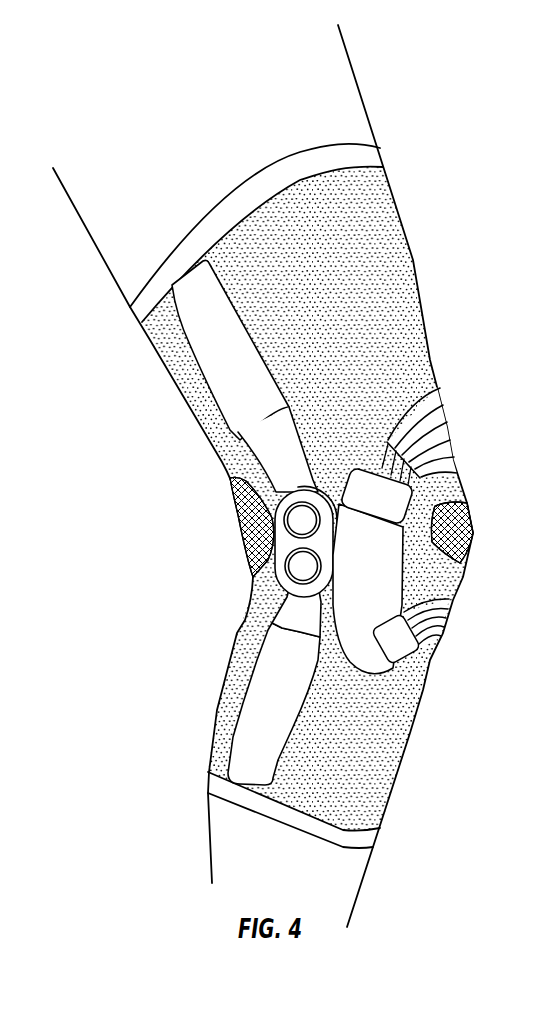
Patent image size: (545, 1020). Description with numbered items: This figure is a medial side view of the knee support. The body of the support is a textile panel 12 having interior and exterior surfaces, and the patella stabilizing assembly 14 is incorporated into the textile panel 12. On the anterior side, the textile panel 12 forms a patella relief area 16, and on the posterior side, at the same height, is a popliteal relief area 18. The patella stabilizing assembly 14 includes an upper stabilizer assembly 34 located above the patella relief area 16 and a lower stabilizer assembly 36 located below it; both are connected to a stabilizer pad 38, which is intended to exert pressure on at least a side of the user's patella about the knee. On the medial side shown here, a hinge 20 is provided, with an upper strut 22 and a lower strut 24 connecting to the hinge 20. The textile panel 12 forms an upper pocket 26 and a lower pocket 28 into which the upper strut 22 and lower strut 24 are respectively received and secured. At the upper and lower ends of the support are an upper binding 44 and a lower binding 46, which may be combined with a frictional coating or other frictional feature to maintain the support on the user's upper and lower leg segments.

The textile panel 12 is at (383, 230).
The patella stabilizing assembly 14 is at (442, 433).
The patella relief area 16 is at (467, 523).
The popliteal relief area 18 is at (247, 518).
The hinge 20 is at (287, 541).
The upper strut 22 is at (272, 441).
The lower strut 24 is at (280, 602).
The upper pocket 26 is at (220, 357).
The lower pocket 28 is at (251, 681).
The upper stabilizer assembly 34 is at (443, 392).
The lower stabilizer assembly 36 is at (453, 612).
The stabilizer pad 38 is at (380, 563).
The upper binding 44 is at (362, 153).
The lower binding 46 is at (350, 838).